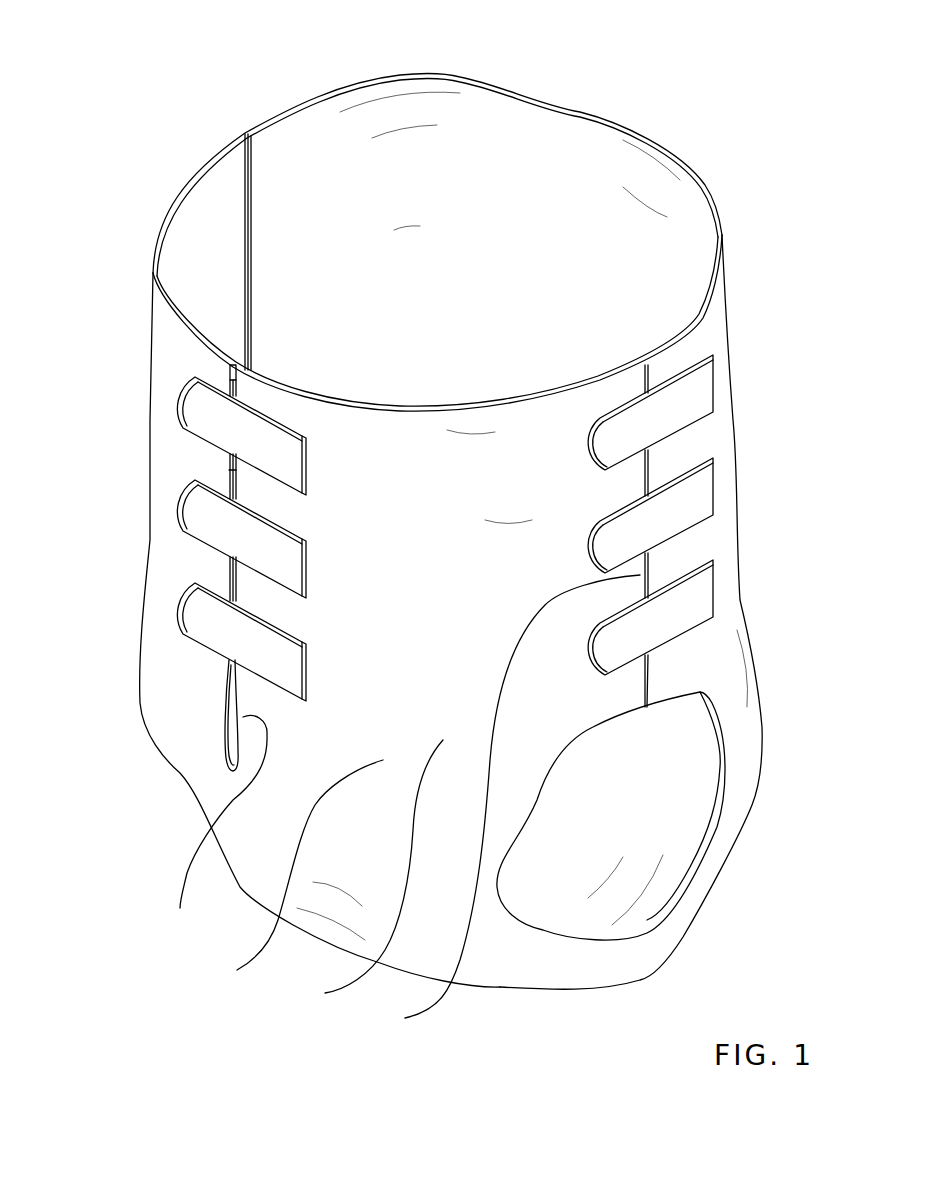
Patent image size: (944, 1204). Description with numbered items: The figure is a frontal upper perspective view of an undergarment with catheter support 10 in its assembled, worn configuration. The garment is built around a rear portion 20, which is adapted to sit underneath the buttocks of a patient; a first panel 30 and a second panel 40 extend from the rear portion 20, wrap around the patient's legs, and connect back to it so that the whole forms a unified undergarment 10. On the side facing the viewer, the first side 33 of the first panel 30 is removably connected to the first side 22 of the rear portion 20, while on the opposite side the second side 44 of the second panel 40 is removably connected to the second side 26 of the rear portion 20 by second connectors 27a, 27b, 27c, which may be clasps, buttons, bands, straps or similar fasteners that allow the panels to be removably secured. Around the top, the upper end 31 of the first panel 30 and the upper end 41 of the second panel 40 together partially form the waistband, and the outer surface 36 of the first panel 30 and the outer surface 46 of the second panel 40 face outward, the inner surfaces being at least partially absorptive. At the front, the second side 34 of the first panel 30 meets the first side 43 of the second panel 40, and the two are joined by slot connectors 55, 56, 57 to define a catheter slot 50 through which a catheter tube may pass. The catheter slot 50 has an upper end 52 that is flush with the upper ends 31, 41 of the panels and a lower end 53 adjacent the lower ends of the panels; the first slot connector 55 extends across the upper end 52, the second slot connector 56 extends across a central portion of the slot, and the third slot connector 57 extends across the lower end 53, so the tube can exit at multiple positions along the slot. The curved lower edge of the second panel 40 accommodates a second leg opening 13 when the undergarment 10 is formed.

The undergarment with catheter support 10 is at (165, 75).
The second leg opening 13 is at (640, 787).
The rear portion 20 is at (577, 212).
The first side of the rear portion 22 is at (252, 168).
The second side of the rear portion 26 is at (648, 473).
The second connector 27a is at (650, 412).
The second connector 27b is at (680, 503).
The second connector 27c is at (670, 605).
The first panel 30 is at (163, 215).
The upper end of the first panel 31 is at (150, 262).
The first side of the first panel 33 is at (247, 207).
The second side of the first panel 34 is at (230, 473).
The outer surface of the first panel 36 is at (162, 535).
The second panel 40 is at (362, 875).
The upper end of the second panel 41 is at (413, 400).
The first side of the second panel 43 is at (201, 820).
The second side of the second panel 44 is at (503, 807).
The outer surface of the second panel 46 is at (287, 875).
The catheter slot 50 is at (230, 575).
The upper end of the catheter slot 52 is at (235, 363).
The lower end of the catheter slot 53 is at (231, 747).
The first slot connector 55 is at (202, 408).
The second slot connector 56 is at (200, 512).
The third slot connector 57 is at (193, 620).